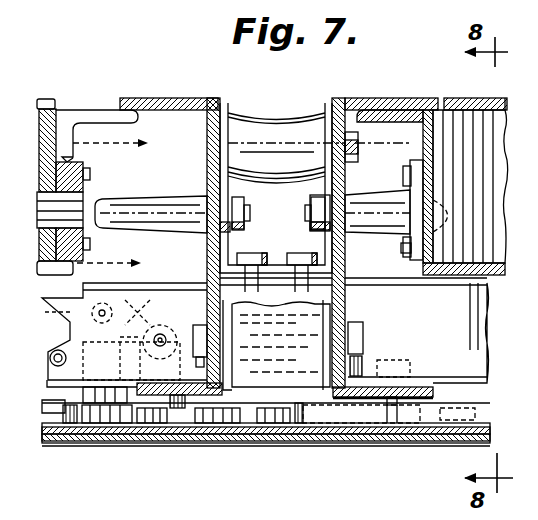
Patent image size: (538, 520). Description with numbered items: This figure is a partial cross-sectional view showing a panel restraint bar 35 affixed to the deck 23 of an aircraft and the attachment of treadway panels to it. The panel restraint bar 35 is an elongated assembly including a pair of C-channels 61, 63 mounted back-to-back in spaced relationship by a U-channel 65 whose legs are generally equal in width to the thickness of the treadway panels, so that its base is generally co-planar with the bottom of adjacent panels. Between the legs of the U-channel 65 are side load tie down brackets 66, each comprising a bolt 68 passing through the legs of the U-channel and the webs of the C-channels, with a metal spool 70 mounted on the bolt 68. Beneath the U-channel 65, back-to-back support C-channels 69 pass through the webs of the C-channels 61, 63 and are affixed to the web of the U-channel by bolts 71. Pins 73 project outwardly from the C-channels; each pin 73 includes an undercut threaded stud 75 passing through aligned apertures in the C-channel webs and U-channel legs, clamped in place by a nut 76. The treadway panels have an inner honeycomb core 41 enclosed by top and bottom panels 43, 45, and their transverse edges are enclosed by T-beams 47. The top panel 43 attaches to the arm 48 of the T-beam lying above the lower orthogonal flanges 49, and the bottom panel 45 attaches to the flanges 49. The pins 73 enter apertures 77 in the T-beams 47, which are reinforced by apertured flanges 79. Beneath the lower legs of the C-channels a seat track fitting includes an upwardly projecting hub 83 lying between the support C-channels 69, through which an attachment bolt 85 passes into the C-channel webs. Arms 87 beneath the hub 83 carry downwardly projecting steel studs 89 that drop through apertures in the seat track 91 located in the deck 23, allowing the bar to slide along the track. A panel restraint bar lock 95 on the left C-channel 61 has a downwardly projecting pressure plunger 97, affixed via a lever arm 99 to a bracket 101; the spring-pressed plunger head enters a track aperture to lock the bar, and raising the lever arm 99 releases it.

The deck 23 is at (440, 441).
The panel restraint bar 35 is at (341, 60).
The inner honeycomb core 41 is at (53, 140).
The top panel 43 is at (466, 100).
The bottom panel 45 is at (507, 276).
The T-beam 47 is at (396, 100).
The arm of the T-beam 48 is at (478, 100).
The lower orthogonal flange 49 is at (459, 276).
The C-channel 61 is at (168, 83).
The C-channel 63 is at (346, 100).
The U-channel 65 is at (225, 104).
The side load tie down bracket 66 is at (263, 113).
The bolt 68 is at (360, 145).
The support C-channel 69 is at (145, 283).
The metal spool 70 is at (300, 116).
The bolt 71 is at (300, 253).
The pin 73 is at (128, 206).
The undercut threaded stud 75 is at (302, 209).
The nut 76 is at (343, 237).
The aperture 77 is at (395, 249).
The apertured flange 79 is at (410, 166).
The hub 83 is at (315, 321).
The attachment bolt 85 is at (363, 342).
The arm 87 is at (172, 408).
The steel stud 89 is at (243, 413).
The seat track 91 is at (132, 420).
The panel restraint bar lock 95 is at (105, 433).
The pressure plunger 97 is at (100, 396).
The lever arm 99 is at (147, 300).
The bracket 101 is at (181, 325).